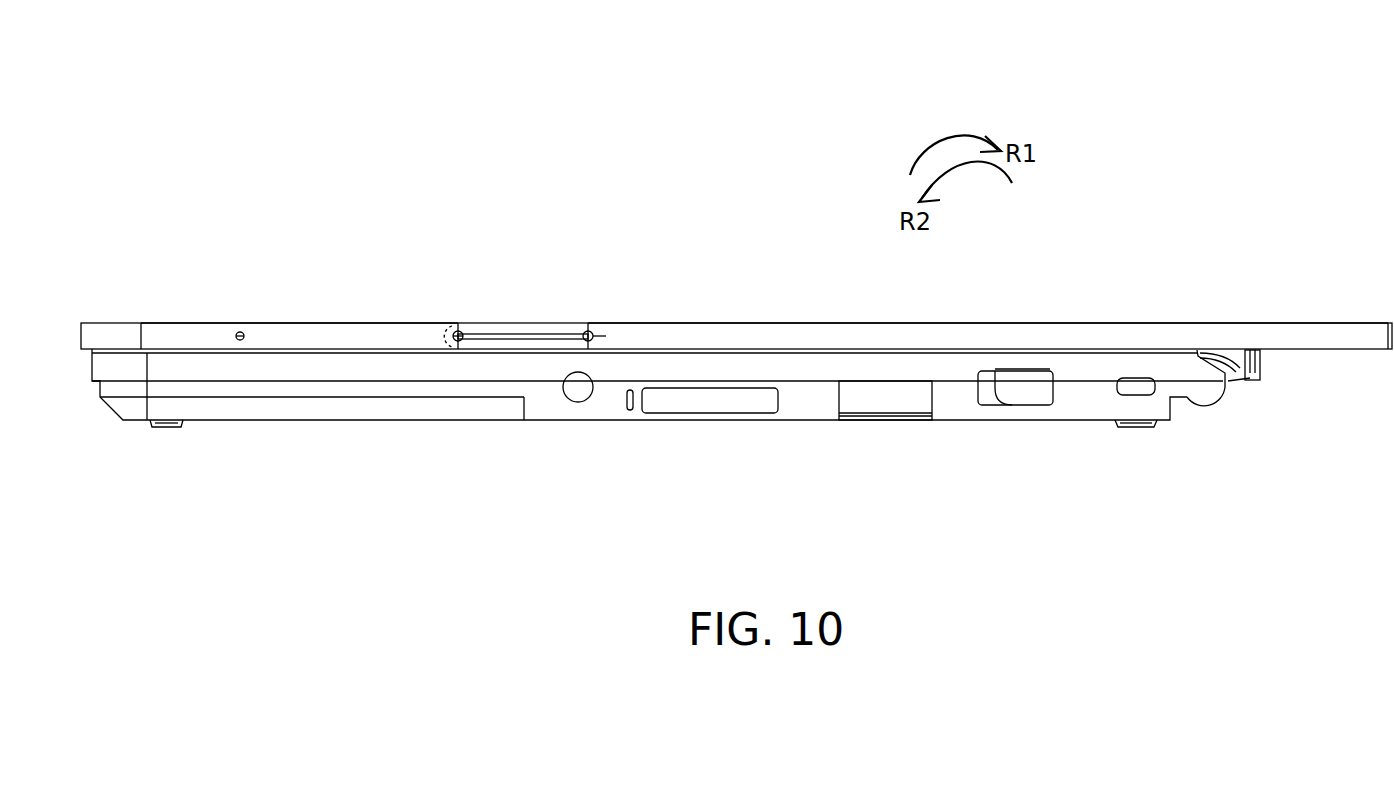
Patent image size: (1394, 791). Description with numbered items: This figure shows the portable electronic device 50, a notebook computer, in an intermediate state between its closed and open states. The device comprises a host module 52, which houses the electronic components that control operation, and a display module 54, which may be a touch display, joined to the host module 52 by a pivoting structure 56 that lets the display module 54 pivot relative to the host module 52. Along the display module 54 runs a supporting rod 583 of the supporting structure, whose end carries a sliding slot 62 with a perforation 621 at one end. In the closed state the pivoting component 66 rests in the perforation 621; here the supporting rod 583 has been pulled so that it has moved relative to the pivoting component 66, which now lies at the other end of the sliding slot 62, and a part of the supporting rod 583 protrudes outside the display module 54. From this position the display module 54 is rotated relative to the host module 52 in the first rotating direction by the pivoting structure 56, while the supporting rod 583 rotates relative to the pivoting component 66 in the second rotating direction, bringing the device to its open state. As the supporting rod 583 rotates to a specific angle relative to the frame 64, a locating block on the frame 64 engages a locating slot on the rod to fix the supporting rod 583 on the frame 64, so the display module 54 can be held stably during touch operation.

The portable electronic device 50 is at (1224, 141).
The host module 52 is at (943, 368).
The display module 54 is at (72, 326).
The pivoting structure 56 is at (1205, 405).
The sliding slot 62 is at (530, 334).
The frame 64 is at (348, 328).
The pivoting component 66 is at (454, 331).
The supporting rod 583 is at (1067, 332).
The perforation 621 is at (594, 332).